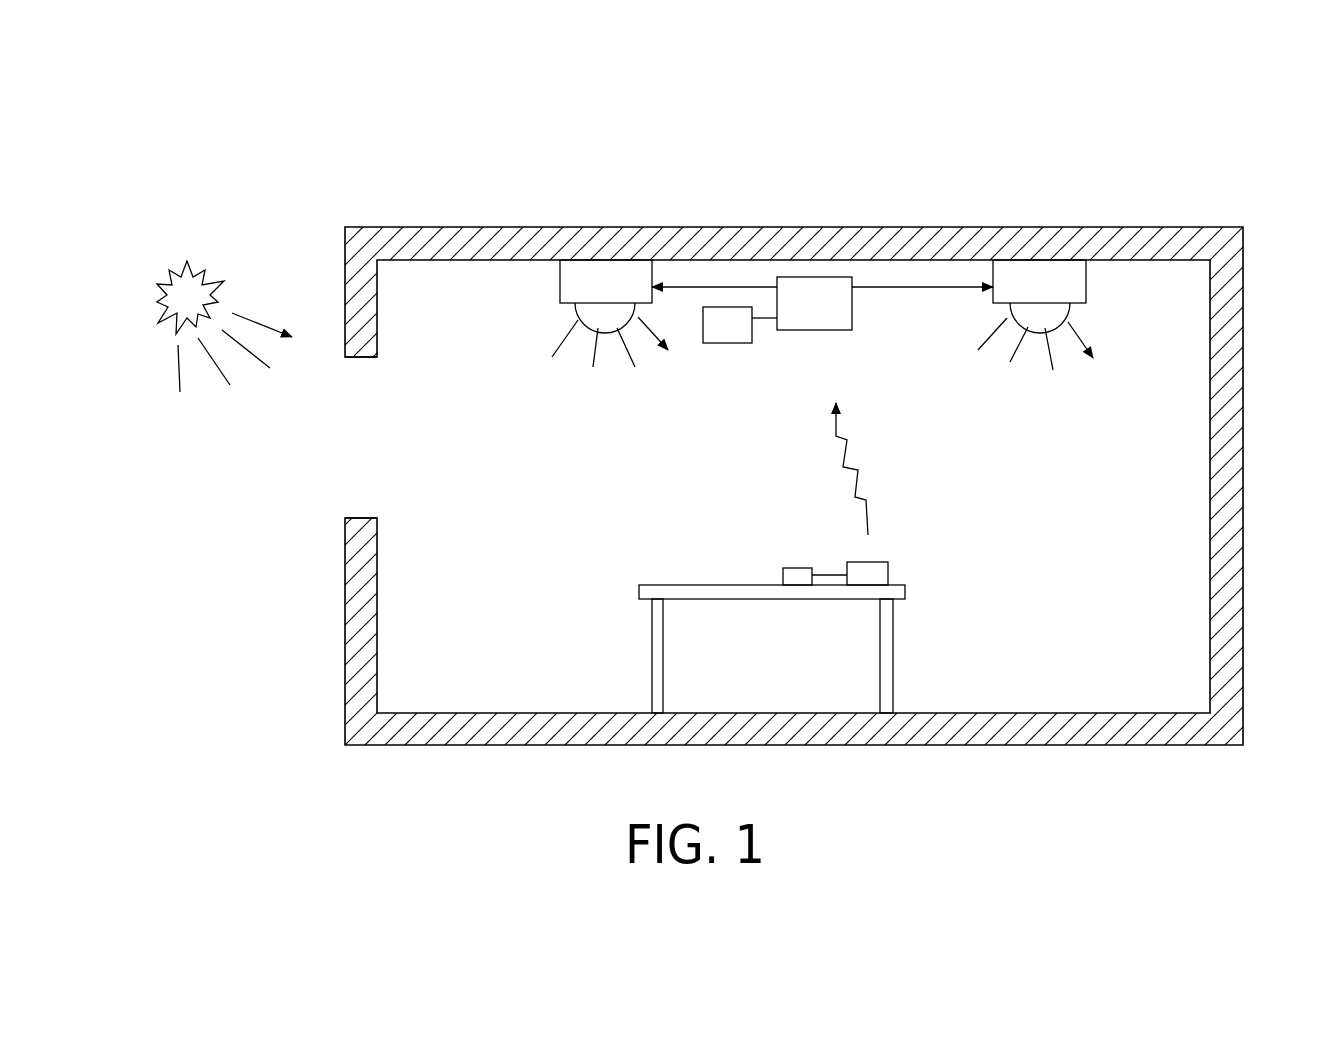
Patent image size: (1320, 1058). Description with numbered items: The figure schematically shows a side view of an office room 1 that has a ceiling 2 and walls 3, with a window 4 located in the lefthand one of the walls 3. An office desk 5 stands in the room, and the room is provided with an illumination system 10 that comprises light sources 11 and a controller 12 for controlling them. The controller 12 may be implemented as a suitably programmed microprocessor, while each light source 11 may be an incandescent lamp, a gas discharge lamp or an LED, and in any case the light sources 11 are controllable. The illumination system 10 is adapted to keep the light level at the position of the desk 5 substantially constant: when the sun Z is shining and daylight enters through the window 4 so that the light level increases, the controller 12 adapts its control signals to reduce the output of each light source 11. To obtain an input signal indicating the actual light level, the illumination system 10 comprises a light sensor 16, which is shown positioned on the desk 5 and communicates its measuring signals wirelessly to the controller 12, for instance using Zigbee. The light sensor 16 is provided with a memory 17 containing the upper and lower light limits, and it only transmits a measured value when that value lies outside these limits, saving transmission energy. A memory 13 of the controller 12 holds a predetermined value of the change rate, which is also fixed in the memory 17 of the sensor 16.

The office room 1 is at (660, 416).
The ceiling 2 is at (458, 227).
The walls 3 is at (345, 557).
The window 4 is at (352, 468).
The office desk 5 is at (685, 585).
The illumination system 10 is at (829, 275).
The light source 11 is at (822, 315).
The controller 12 is at (822, 303).
The memory 13 is at (727, 343).
The light sensor 16 is at (890, 570).
The memory 17 is at (797, 568).
The sun Z is at (224, 316).